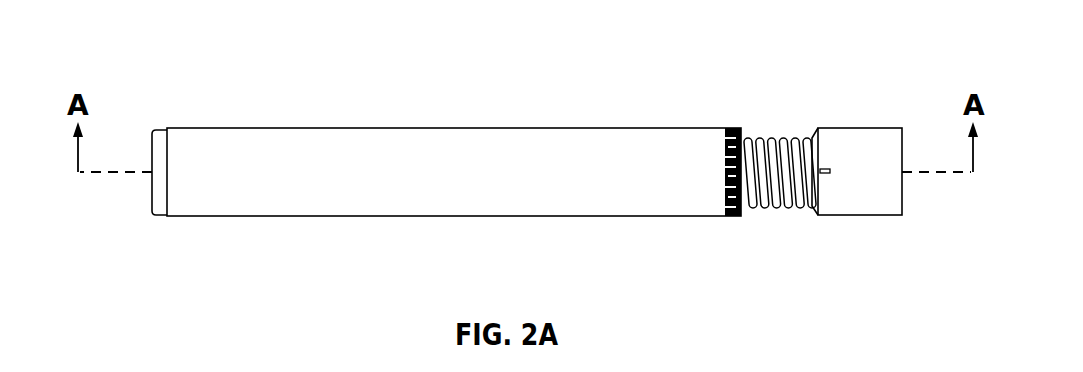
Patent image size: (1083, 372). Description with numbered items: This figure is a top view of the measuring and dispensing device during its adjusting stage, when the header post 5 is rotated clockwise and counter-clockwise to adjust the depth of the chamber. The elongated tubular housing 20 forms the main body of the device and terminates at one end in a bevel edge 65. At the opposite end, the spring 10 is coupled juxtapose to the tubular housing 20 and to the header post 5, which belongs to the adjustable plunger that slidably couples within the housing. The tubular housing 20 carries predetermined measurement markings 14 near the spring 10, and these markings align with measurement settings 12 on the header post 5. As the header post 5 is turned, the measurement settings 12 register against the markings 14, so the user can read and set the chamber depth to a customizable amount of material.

The header post 5 is at (868, 217).
The spring 10 is at (765, 208).
The measurement settings 12 is at (823, 170).
The predetermined measurement markings 14 is at (728, 168).
The tubular housing 20 is at (403, 216).
The bevel edge 65 is at (158, 211).